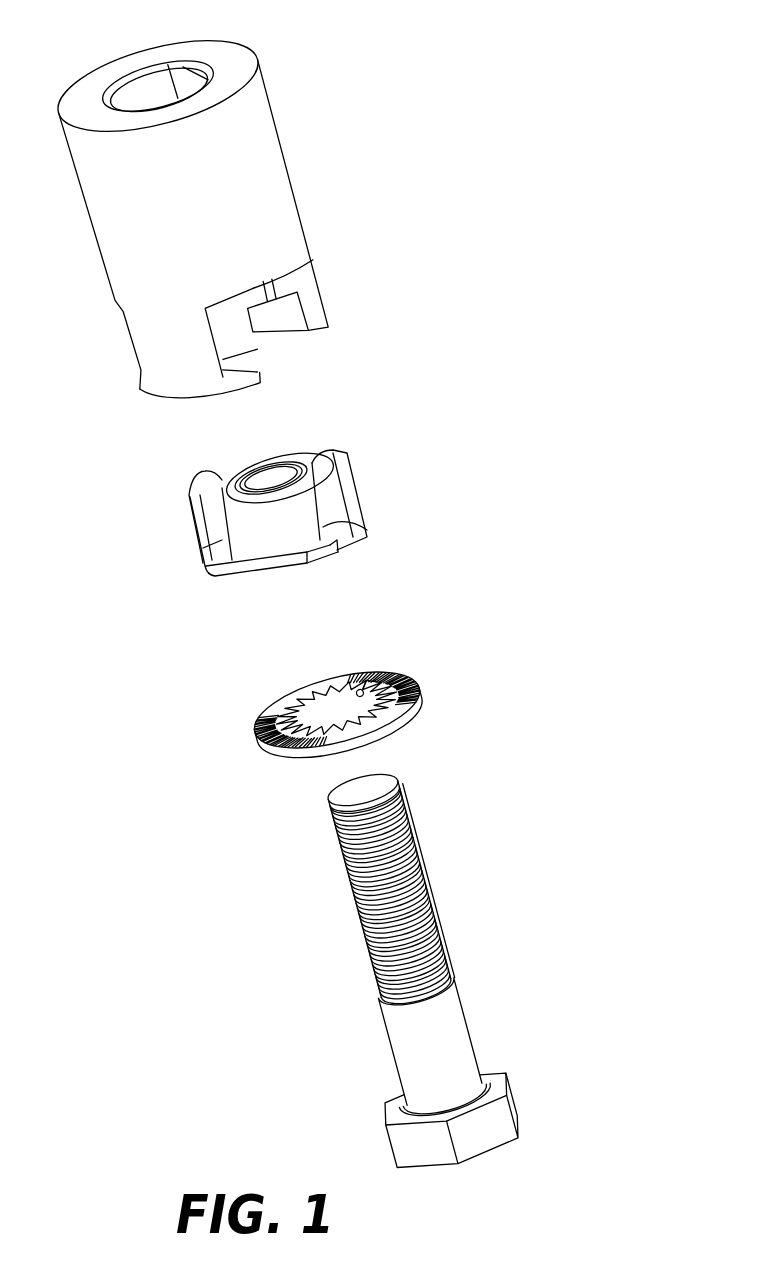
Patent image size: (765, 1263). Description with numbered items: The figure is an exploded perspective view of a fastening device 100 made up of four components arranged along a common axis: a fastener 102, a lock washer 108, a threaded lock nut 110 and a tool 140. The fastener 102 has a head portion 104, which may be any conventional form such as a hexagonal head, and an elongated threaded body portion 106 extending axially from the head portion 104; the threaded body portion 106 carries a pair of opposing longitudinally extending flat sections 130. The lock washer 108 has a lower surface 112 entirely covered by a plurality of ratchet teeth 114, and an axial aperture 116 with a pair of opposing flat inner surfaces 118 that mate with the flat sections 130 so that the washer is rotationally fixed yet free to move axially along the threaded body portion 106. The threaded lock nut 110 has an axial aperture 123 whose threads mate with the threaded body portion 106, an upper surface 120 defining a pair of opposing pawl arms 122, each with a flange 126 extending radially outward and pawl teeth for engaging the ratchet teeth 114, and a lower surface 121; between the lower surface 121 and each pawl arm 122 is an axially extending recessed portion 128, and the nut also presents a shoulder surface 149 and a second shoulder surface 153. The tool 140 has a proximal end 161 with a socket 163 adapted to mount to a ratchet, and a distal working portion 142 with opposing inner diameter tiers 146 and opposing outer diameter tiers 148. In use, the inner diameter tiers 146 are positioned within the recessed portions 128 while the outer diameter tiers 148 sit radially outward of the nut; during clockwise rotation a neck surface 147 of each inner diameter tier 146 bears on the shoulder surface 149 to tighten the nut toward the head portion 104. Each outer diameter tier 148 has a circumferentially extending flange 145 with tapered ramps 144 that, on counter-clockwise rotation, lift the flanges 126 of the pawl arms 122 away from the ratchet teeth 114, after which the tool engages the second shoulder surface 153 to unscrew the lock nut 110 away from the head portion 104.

The fastening device 100 is at (580, 222).
The fastener 102 is at (502, 925).
The head portion 104 is at (488, 1131).
The elongated threaded body portion 106 is at (418, 886).
The lock washer 108 is at (470, 690).
The threaded lock nut 110 is at (413, 492).
The lower surface 112 is at (341, 659).
The ratchet teeth 114 is at (377, 682).
The axial aperture 116 is at (325, 690).
The flat inner surfaces 118 is at (292, 684).
The upper surface 120 is at (358, 553).
The lower surface 121 is at (331, 453).
The pawl arms 122 is at (257, 582).
The axial aperture 123 is at (276, 468).
The flange 126 is at (352, 575).
The axially extending recessed portions 128 is at (236, 514).
The flat sections 130 is at (330, 796).
The tool 140 is at (396, 212).
The distal working portion 142 is at (334, 292).
The tapered ramps 144 is at (256, 374).
The circumferentially extending flange 145 is at (238, 394).
The inner diameter tiers 146 is at (268, 294).
The neck surface 147 is at (290, 281).
The outer diameter tiers 148 is at (148, 381).
The shoulder surface 149 is at (205, 531).
The second shoulder surface 153 is at (350, 528).
The proximal end 161 is at (247, 42).
The socket 163 is at (150, 84).